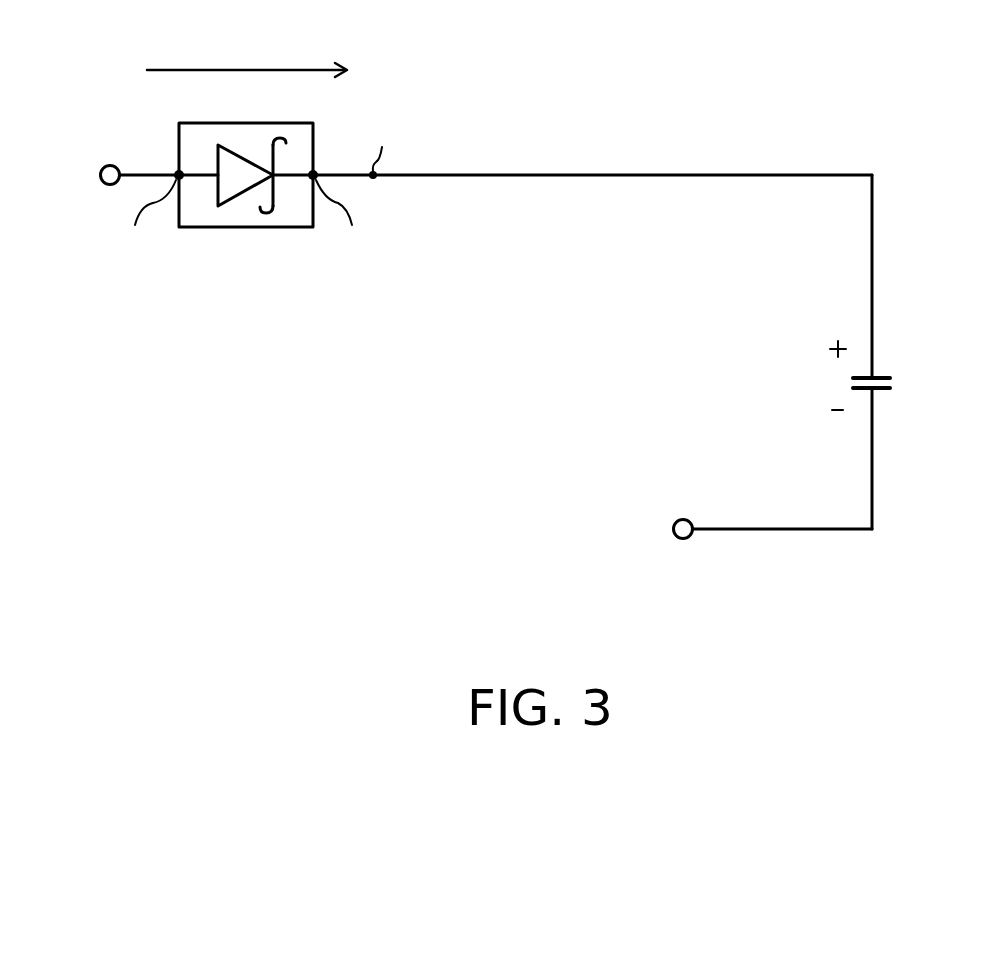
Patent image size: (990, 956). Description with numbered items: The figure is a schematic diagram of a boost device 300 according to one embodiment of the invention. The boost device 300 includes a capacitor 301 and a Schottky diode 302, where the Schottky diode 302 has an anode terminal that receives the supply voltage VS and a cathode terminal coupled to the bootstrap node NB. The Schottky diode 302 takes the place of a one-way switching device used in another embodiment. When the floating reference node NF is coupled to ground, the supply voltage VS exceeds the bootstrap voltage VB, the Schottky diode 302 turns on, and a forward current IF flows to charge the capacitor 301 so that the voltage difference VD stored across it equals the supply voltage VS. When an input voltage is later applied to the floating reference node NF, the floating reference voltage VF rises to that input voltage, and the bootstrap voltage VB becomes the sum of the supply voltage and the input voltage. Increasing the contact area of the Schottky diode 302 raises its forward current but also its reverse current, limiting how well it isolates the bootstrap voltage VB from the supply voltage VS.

The boost device 300 is at (982, 637).
The capacitor 301 is at (890, 384).
The Schottky diode 302 is at (179, 123).